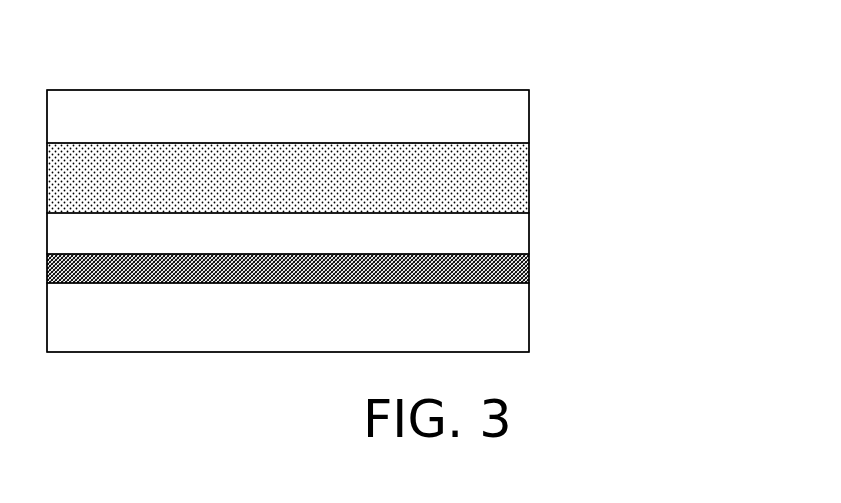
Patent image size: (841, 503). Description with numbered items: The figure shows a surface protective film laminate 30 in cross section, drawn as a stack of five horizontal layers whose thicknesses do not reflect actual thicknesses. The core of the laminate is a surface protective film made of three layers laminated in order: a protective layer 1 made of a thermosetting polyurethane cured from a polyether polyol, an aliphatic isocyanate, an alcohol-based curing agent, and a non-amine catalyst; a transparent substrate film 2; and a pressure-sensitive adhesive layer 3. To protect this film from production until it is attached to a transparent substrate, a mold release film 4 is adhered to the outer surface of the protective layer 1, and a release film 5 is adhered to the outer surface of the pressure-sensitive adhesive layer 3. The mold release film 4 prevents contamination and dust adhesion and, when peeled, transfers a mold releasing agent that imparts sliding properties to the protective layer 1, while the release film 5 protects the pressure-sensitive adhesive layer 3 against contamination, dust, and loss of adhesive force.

The surface protective film laminate 30 is at (538, 47).
The mold release film 4 is at (510, 113).
The protective layer 1 is at (508, 168).
The transparent substrate film 2 is at (508, 232).
The pressure-sensitive adhesive layer 3 is at (520, 272).
The release film 5 is at (508, 333).